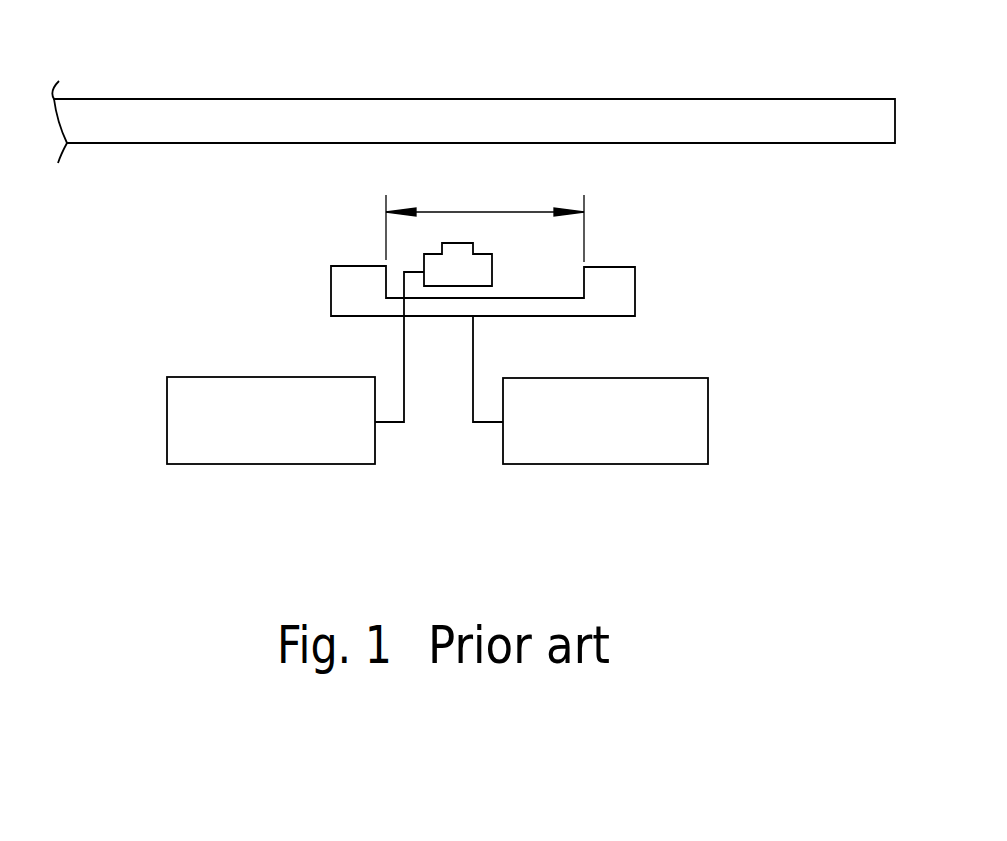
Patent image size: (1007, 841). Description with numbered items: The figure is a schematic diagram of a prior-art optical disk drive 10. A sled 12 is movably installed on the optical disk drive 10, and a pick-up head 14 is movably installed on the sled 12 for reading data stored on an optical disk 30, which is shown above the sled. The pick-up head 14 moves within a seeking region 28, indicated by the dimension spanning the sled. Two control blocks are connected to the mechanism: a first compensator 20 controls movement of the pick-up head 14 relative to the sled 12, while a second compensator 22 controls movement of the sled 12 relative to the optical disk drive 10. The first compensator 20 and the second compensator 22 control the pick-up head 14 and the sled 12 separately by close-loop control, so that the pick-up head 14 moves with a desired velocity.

The optical disk drive 10 is at (827, 248).
The sled 12 is at (635, 290).
The pick-up head 14 is at (432, 252).
The first compensator 20 is at (238, 464).
The second compensator 22 is at (645, 464).
The seeking region 28 is at (485, 216).
The optical disk 30 is at (707, 99).